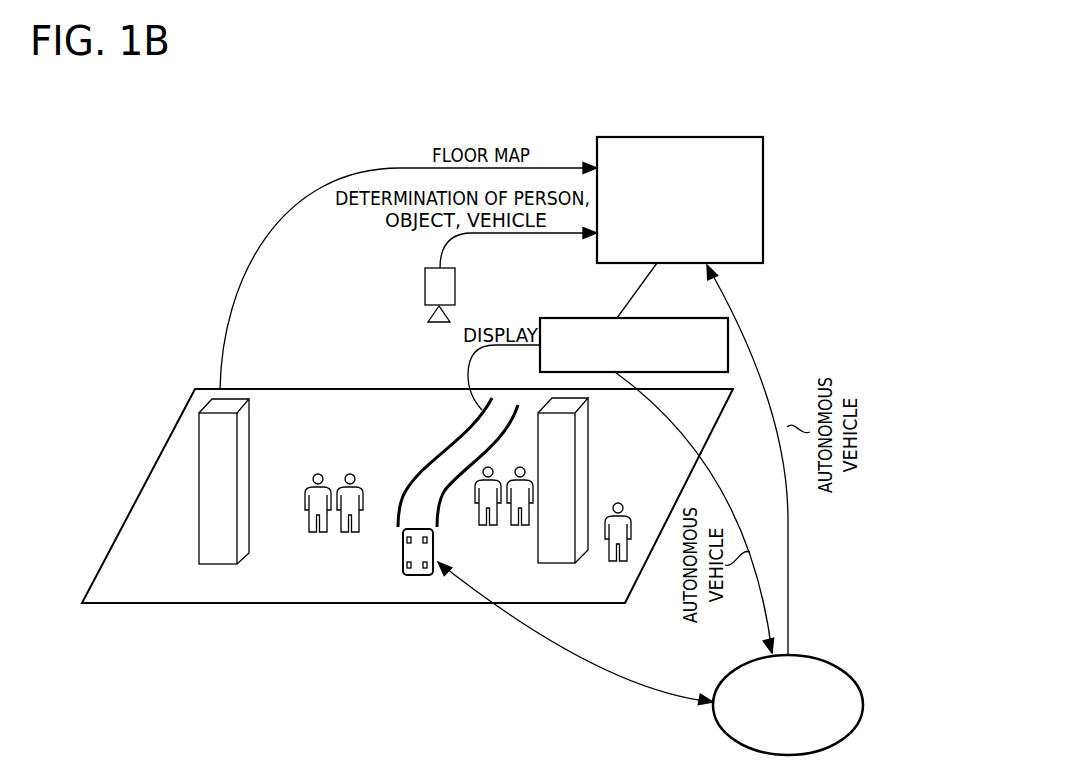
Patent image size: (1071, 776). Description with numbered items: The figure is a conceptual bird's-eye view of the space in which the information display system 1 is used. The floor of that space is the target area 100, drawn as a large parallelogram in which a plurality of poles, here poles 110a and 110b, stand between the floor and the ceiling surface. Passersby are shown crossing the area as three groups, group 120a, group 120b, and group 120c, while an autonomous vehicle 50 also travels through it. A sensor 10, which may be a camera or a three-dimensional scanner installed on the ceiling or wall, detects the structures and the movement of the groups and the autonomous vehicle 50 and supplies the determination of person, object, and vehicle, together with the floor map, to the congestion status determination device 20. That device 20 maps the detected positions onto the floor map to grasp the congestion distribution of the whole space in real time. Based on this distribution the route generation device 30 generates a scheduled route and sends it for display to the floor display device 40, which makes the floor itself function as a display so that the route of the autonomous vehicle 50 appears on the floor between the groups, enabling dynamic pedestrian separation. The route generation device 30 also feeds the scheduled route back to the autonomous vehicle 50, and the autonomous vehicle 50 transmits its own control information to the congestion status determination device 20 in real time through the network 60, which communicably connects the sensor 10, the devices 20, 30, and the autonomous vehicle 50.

The information display system 1 is at (805, 132).
The sensor 10 is at (425, 290).
The congestion status determination device 20 is at (763, 200).
The route generation device 30 is at (578, 318).
The floor display device 40 is at (235, 603).
The autonomous vehicle 50 is at (403, 552).
The network 60 is at (810, 656).
The target area 100 is at (165, 298).
The pole 110a is at (199, 483).
The pole 110b is at (590, 545).
The group 120a is at (336, 475).
The group 120b is at (505, 528).
The group 120c is at (618, 503).